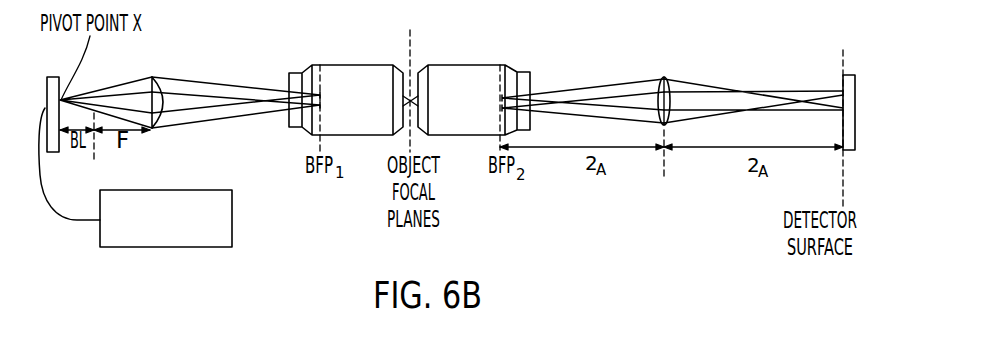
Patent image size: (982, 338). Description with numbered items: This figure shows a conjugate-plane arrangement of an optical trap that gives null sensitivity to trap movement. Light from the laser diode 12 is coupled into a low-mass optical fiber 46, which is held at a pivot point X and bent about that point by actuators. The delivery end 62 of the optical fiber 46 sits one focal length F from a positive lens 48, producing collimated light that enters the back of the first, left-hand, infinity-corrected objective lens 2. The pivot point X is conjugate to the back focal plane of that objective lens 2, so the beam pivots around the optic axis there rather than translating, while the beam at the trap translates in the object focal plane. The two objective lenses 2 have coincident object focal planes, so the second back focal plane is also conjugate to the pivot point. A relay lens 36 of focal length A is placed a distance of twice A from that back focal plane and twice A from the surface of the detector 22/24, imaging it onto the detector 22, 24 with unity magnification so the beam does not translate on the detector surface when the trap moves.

The objective lens 2 is at (370, 76).
The laser diode 12 is at (207, 248).
The detector 22 is at (814, 119).
The detector 24 is at (847, 97).
The relay lens 36 is at (662, 96).
The optical fiber 46 is at (80, 222).
The positive lens 48 is at (158, 100).
The delivery end 62 is at (95, 93).